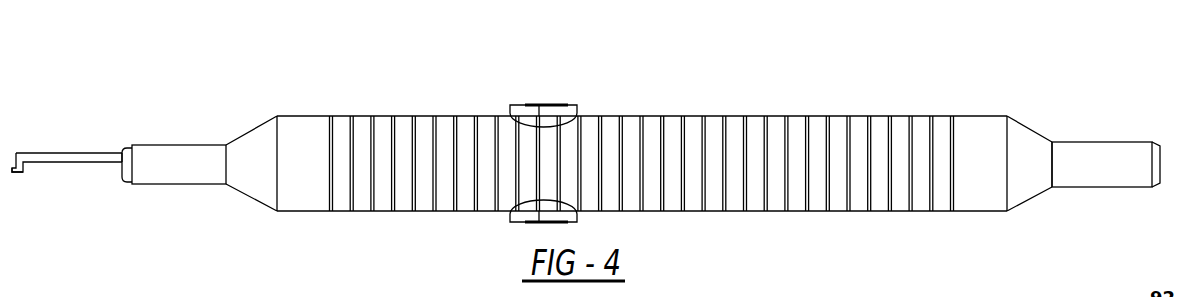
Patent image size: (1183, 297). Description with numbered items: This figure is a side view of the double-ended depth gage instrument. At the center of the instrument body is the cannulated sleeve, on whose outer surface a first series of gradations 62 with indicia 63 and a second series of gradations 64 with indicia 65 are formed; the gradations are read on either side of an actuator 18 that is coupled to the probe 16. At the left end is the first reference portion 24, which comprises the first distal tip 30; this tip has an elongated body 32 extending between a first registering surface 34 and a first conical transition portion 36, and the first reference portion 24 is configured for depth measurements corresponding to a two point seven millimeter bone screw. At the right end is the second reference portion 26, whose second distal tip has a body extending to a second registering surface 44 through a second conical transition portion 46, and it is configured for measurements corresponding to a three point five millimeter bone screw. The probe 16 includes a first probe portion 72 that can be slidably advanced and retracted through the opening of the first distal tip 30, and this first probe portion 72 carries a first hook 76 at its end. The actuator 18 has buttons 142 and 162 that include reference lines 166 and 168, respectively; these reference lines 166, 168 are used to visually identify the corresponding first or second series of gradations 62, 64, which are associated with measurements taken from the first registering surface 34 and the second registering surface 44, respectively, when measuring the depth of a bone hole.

The probe 16 is at (68, 173).
The actuator 18 is at (642, 165).
The first reference portion 24 is at (186, 169).
The second reference portion 26 is at (1090, 150).
The first distal tip 30 is at (172, 157).
The elongated body 32 is at (1092, 148).
The first registering surface 34 is at (128, 183).
The first conical transition portion 36 is at (257, 183).
The second registering surface 44 is at (1157, 185).
The second conical transition portion 46 is at (1023, 135).
The first series of gradations 62 is at (392, 130).
The indicia 63 is at (425, 145).
The second series of gradations 64 is at (788, 135).
The indicia 65 is at (857, 137).
The first probe portion 72 is at (43, 153).
The first hook 76 is at (12, 172).
The button 142 is at (565, 113).
The button 162 is at (517, 215).
The reference line 166 is at (560, 110).
The reference line 168 is at (537, 221).